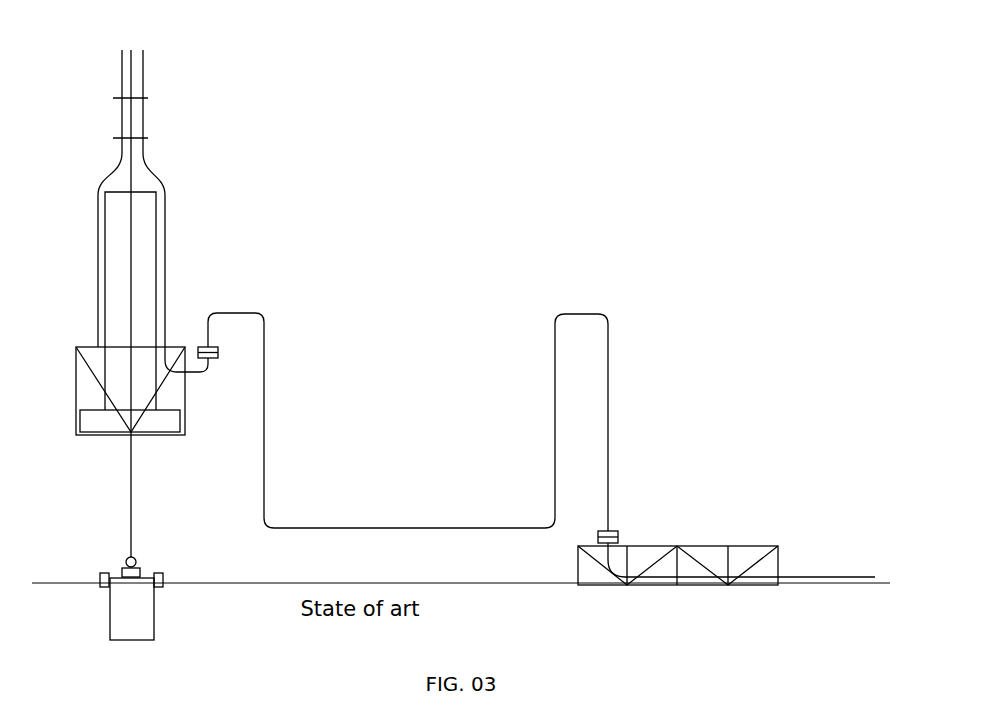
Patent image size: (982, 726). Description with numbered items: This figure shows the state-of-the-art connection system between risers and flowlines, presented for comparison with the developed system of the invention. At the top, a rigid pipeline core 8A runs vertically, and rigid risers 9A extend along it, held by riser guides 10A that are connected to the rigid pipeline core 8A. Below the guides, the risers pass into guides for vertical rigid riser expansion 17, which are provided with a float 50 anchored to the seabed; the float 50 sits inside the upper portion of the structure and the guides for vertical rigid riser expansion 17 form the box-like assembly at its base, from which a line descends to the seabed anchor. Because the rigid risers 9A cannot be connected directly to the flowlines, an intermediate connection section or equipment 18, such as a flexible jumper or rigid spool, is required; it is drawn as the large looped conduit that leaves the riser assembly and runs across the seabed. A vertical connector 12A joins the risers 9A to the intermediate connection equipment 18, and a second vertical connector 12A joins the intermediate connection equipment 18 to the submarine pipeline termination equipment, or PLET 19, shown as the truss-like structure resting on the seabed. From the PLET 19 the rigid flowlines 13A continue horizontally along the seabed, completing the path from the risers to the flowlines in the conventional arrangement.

The rigid pipeline core 8A is at (135, 86).
The rigid risers 9A is at (146, 117).
The riser guides 10A is at (156, 146).
The float 50 is at (150, 242).
The vertical connectors 12A is at (224, 344).
The guides for vertical rigid riser expansion 17 is at (190, 384).
The intermediate connection section/equipment 18 is at (270, 458).
The submarine pipeline termination equipment (PLET) 19 is at (704, 541).
The rigid flowlines 13A is at (800, 571).